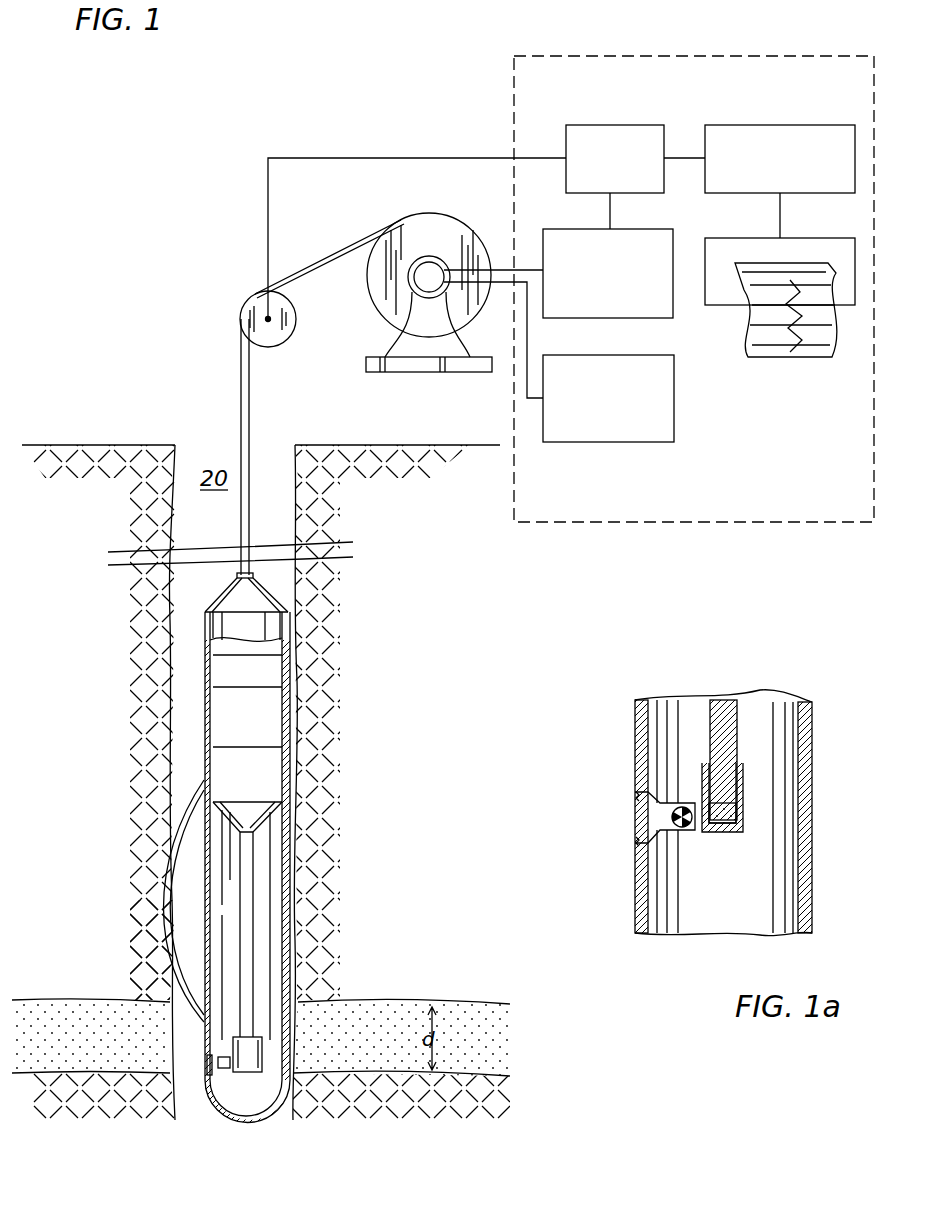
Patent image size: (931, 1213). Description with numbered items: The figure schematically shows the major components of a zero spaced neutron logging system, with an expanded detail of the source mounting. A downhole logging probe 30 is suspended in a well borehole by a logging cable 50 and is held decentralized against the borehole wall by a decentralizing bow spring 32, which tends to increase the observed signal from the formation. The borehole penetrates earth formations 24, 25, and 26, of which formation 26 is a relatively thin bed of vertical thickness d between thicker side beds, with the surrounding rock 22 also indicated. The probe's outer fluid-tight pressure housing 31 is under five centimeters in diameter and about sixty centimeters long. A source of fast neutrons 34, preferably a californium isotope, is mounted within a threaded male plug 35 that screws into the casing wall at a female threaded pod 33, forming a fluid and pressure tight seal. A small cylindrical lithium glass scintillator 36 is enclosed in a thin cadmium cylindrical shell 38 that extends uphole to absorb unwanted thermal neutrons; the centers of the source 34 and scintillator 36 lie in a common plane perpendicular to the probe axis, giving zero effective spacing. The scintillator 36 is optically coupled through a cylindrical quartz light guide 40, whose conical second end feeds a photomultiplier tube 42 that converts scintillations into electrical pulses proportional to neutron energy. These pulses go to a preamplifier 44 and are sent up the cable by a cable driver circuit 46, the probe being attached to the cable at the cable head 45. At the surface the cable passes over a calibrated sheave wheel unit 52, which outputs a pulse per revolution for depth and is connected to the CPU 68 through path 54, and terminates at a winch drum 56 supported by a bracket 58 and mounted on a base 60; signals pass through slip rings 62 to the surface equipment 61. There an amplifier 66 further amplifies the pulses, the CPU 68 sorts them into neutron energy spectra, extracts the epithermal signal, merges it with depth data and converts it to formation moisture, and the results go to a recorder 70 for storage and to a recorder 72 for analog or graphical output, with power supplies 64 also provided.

In FIG. 1, the earth formation 22 is at (165, 730).
In FIG. 1, the earth formation 24 is at (150, 845).
In FIG. 1, the earth formation 25 is at (92, 1108).
In FIG. 1, the formation 26 is at (72, 1030).
In FIG. 1, the downhole logging probe 30 is at (207, 983).
In FIG. 1, the pressure housing 31 is at (205, 888).
In FIG. 1a, the pressure housing 31 is at (640, 742).
In FIG. 1, the decentralizing bow spring 32 is at (185, 815).
In FIG. 1a, the female threaded pod 33 is at (648, 797).
In FIG. 1, the source of fast neutrons 34 is at (225, 1070).
In FIG. 1a, the source of fast neutrons 34 is at (685, 828).
In FIG. 1, the threaded male plug 35 is at (208, 1062).
In FIG. 1a, the threaded male plug 35 is at (640, 815).
In FIG. 1a, the scintillator 36 is at (728, 825).
In FIG. 1, the cylindrical shell 38 is at (263, 1057).
In FIG. 1a, the cylindrical shell 38 is at (745, 772).
In FIG. 1, the light guide 40 is at (257, 940).
In FIG. 1a, the light guide 40 is at (722, 707).
In FIG. 1, the photomultiplier tube 42 is at (258, 787).
In FIG. 1, the preamplifier 44 is at (272, 712).
In FIG. 1, the cable head 45 is at (258, 588).
In FIG. 1, the cable driver circuit 46 is at (290, 676).
In FIG. 1, the logging cable 50 is at (240, 400).
In FIG. 1, the calibrated sheave wheel unit 52 is at (258, 310).
In FIG. 1, the path 54 is at (316, 158).
In FIG. 1, the winch drum 56 is at (408, 223).
In FIG. 1, the bracket 58 is at (400, 340).
In FIG. 1, the slip rings 60 is at (438, 372).
In FIG. 1, the surface equipment 61 is at (712, 70).
In FIG. 1, the slip rings 62 is at (431, 262).
In FIG. 1, the power supplies 64 is at (628, 442).
In FIG. 1, the amplifier 66 is at (657, 229).
In FIG. 1, the CPU 68 is at (598, 125).
In FIG. 1, the recorder 70 is at (770, 125).
In FIG. 1, the recorder 72 is at (735, 305).